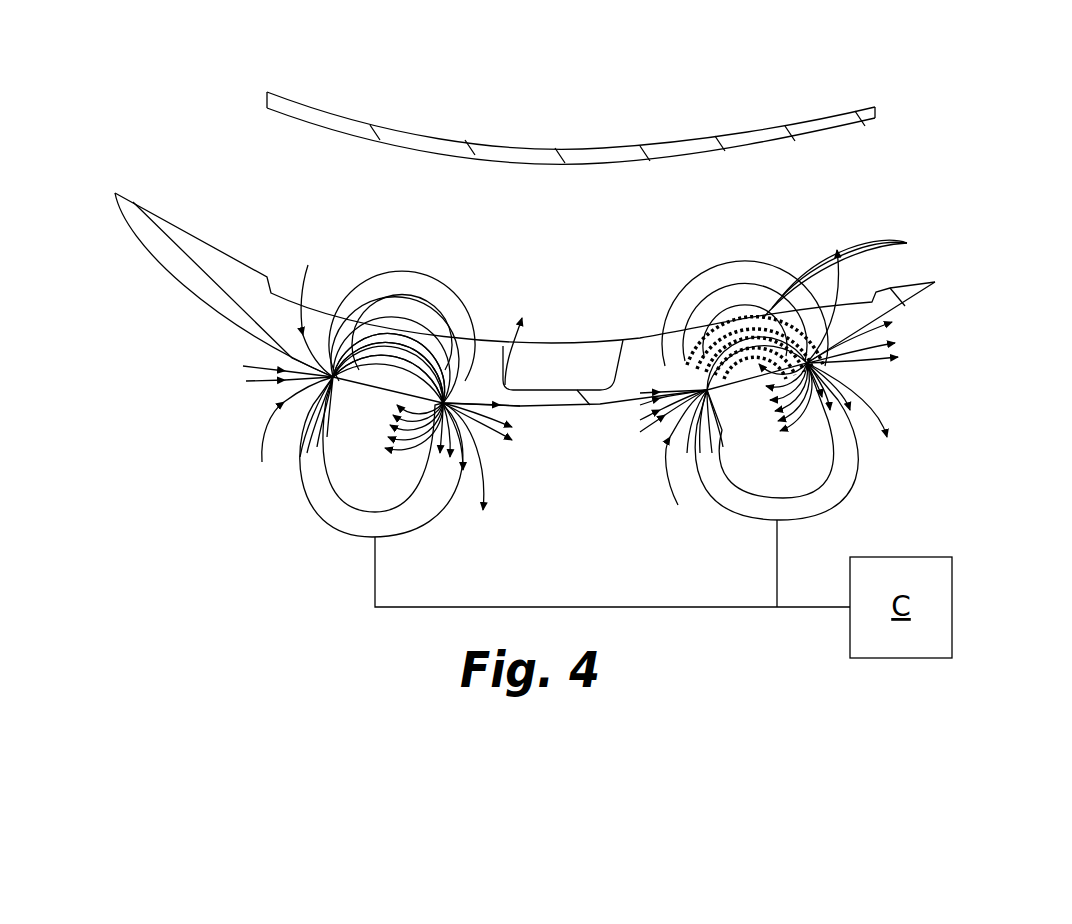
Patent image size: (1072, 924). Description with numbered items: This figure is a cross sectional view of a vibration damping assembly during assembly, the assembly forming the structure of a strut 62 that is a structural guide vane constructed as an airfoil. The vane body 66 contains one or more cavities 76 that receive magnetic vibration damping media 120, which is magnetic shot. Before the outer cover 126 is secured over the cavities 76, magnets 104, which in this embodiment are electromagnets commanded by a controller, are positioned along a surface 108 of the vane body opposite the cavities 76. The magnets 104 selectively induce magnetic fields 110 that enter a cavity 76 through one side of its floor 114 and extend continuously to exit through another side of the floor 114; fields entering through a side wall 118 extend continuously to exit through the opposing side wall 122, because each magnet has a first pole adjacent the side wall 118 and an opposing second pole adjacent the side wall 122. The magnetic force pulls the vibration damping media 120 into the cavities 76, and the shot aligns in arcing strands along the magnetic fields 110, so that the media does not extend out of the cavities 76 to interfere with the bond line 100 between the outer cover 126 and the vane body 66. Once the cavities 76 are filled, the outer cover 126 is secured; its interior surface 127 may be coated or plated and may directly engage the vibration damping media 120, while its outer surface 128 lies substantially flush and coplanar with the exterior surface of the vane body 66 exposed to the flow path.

The strut 62 is at (955, 116).
The vane body 66 is at (177, 242).
The cavities 76 is at (406, 255).
The bond line 100 is at (272, 292).
The magnets 104 is at (395, 537).
The surface of the vane body 108 is at (634, 394).
The magnetic fields 110 is at (302, 196).
The floor of the cavity 114 is at (441, 330).
The side wall 118 is at (450, 305).
The vibration damping media 120 is at (907, 243).
The opposing side wall 122 is at (366, 300).
The outer cover 126 is at (598, 146).
The interior surface 127 is at (288, 113).
The outer surface 128 is at (312, 108).